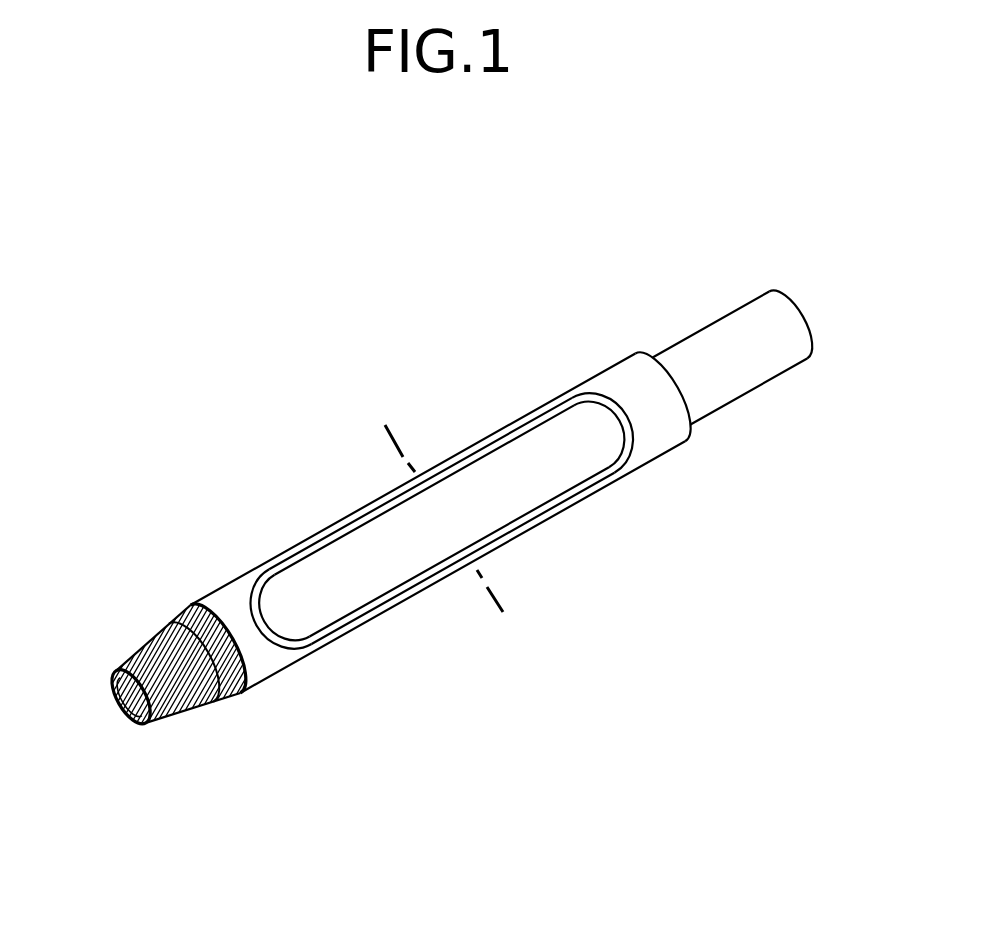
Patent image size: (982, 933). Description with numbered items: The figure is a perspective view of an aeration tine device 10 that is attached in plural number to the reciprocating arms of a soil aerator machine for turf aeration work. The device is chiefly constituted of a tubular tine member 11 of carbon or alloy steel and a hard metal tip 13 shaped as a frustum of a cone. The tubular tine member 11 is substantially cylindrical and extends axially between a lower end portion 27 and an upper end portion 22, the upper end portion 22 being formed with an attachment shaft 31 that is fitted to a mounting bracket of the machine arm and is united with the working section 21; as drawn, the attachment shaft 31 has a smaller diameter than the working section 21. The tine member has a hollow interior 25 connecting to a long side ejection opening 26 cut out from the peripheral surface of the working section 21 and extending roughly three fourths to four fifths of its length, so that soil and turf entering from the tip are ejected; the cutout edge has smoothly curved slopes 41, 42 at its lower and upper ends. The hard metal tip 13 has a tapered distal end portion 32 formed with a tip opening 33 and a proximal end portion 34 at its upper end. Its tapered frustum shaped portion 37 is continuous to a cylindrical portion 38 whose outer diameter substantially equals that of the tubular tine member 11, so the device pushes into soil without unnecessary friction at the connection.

The aeration tine device 10 is at (548, 590).
The tubular tine member 11 is at (555, 478).
The hard metal tip 13 is at (173, 713).
The working section 21 is at (647, 447).
The upper end portion 22 is at (733, 378).
The hollow interior 25 is at (341, 558).
The long side ejection opening 26 is at (368, 615).
The lower end portion 27 is at (250, 678).
The attachment shaft 31 is at (794, 300).
The tapered distal end portion 32 is at (122, 713).
The tip opening 33 is at (122, 700).
The proximal end portion 34 is at (188, 605).
The tapered frustum shaped portion 37 is at (140, 655).
The cylindrical portion 38 is at (177, 615).
The curved slope 41 is at (297, 643).
The curved slope 42 is at (568, 403).